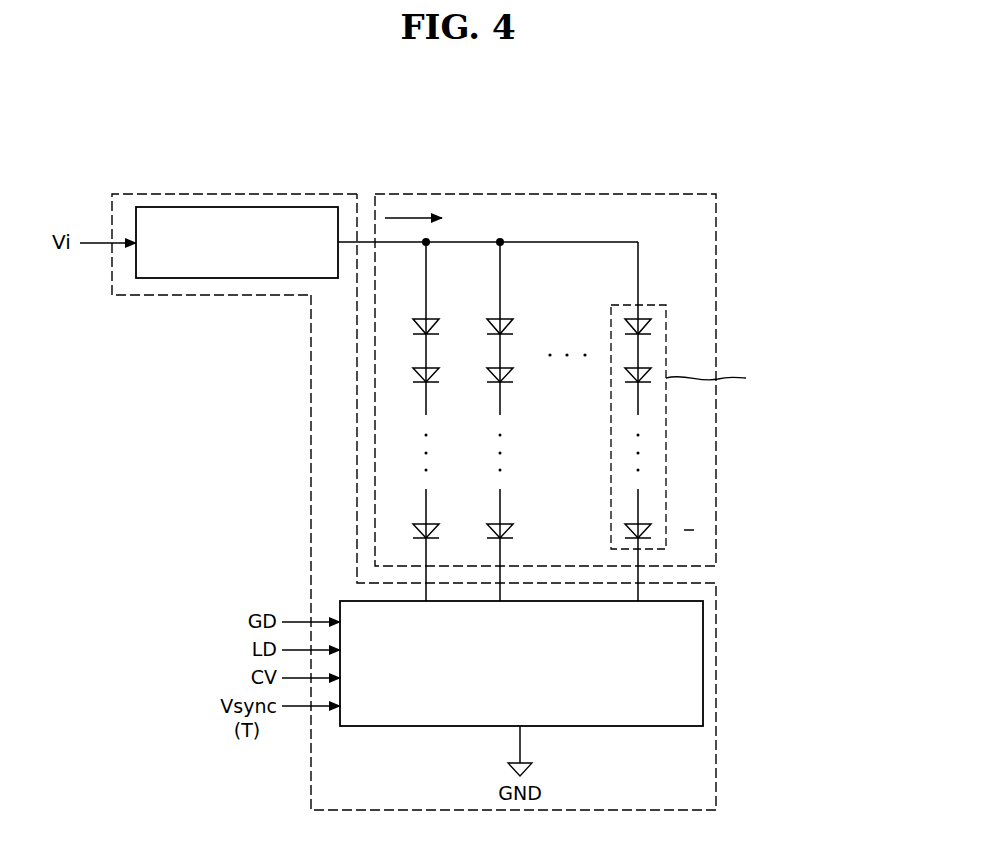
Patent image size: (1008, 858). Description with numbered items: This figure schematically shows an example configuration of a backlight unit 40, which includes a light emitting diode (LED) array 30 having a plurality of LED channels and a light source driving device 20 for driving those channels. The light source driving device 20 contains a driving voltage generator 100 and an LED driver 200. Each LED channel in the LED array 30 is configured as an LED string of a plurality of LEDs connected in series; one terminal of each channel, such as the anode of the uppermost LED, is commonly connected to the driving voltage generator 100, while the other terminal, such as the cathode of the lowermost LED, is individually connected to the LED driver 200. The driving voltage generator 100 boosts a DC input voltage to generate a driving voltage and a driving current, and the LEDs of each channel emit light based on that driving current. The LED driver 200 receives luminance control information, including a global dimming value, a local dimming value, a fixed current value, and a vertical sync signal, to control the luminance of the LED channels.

The backlight unit 40 is at (164, 134).
The driving voltage generator 100 is at (238, 207).
The LED array 30 is at (665, 231).
The light source driving device 20 is at (716, 613).
The LED driver 200 is at (703, 663).